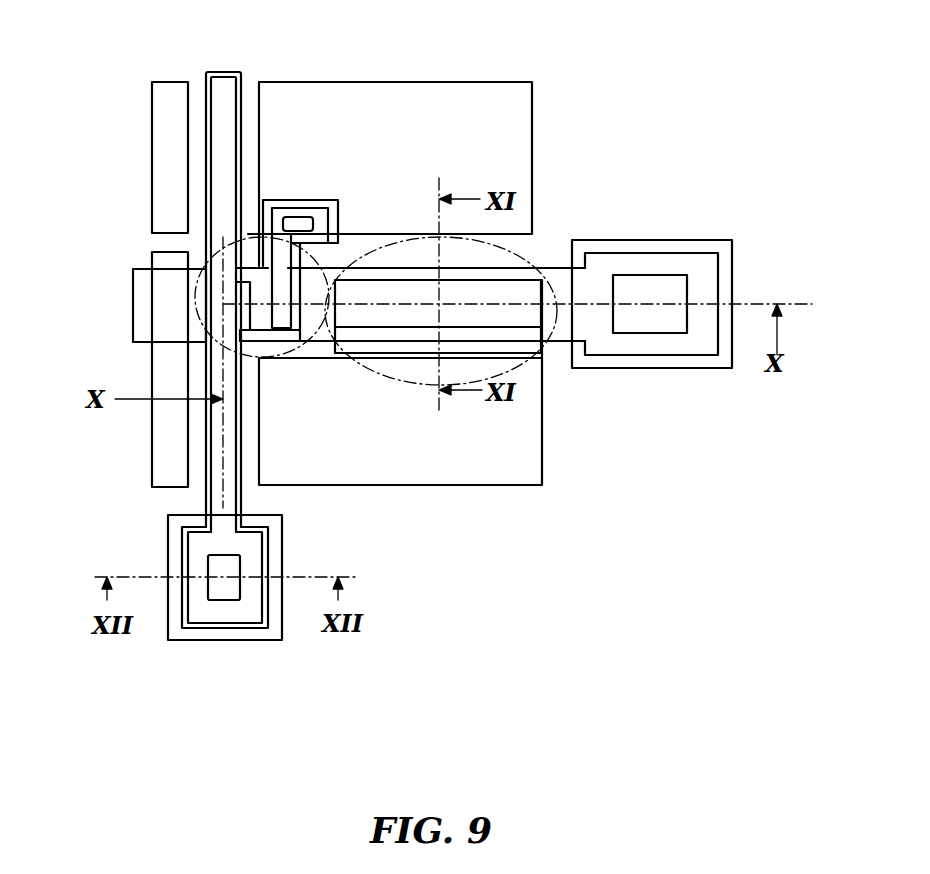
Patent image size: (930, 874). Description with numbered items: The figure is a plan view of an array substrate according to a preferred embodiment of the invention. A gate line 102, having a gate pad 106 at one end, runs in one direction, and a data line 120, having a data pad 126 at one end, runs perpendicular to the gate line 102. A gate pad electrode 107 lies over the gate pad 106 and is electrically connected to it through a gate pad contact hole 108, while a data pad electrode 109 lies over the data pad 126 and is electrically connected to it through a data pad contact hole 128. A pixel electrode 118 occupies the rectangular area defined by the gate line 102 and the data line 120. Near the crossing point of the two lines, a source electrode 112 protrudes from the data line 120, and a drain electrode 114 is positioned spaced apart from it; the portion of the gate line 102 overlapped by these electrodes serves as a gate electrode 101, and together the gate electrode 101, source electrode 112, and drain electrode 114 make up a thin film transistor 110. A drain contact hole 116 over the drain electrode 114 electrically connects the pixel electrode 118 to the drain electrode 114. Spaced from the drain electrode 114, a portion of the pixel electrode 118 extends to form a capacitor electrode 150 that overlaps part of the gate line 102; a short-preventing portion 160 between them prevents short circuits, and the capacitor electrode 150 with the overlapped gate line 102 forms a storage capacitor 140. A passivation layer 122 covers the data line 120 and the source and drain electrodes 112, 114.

The gate electrode 101 is at (250, 335).
The gate line 102 is at (559, 266).
The gate pad 106 is at (688, 357).
The gate pad electrode 107 is at (737, 267).
The gate pad contact hole 108 is at (655, 275).
The data pad electrode 109 is at (282, 613).
The thin film transistor 110 is at (198, 310).
The source electrode 112 is at (249, 259).
The drain electrode 114 is at (300, 258).
The drain contact hole 116 is at (285, 265).
The pixel electrode 118 is at (503, 98).
The data line 120 is at (222, 72).
The passivation layer 122 is at (243, 82).
The data pad 126 is at (250, 623).
The data pad contact hole 128 is at (215, 600).
The storage capacitor 140 is at (413, 385).
The capacitor electrode 150 is at (553, 293).
The short-preventing portion 160 is at (550, 360).